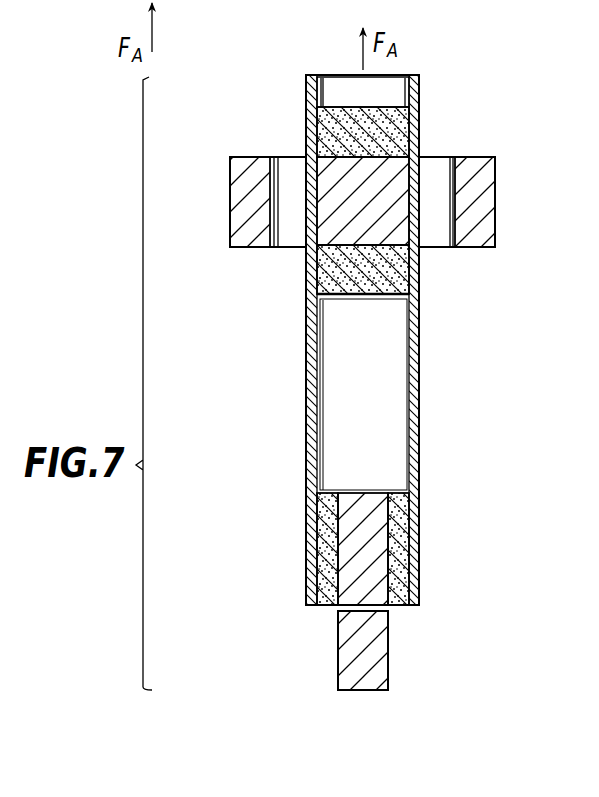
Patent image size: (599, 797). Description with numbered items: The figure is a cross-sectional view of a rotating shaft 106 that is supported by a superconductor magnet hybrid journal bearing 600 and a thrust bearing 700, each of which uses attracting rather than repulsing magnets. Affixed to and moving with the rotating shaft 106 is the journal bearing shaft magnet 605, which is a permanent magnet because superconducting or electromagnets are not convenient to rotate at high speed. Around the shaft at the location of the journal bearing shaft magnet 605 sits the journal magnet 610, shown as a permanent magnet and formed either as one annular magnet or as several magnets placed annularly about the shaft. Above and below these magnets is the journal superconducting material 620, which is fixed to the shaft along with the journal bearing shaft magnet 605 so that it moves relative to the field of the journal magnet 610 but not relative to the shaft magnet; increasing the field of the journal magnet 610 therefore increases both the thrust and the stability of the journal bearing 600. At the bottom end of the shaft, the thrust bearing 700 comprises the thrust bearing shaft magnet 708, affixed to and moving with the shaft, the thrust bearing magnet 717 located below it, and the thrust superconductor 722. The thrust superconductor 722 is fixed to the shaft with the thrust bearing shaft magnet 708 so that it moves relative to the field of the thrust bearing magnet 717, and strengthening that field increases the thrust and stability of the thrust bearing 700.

The rotating shaft 106 is at (316, 88).
The journal superconducting material 620 is at (318, 126).
The journal bearing shaft magnet 605 is at (413, 160).
The journal magnet 610 is at (243, 200).
The journal bearing 600 is at (236, 335).
The thrust bearing shaft magnet 708 is at (340, 493).
The thrust superconductor 722 is at (318, 565).
The thrust bearing magnet 717 is at (345, 654).
The thrust bearing 700 is at (382, 570).